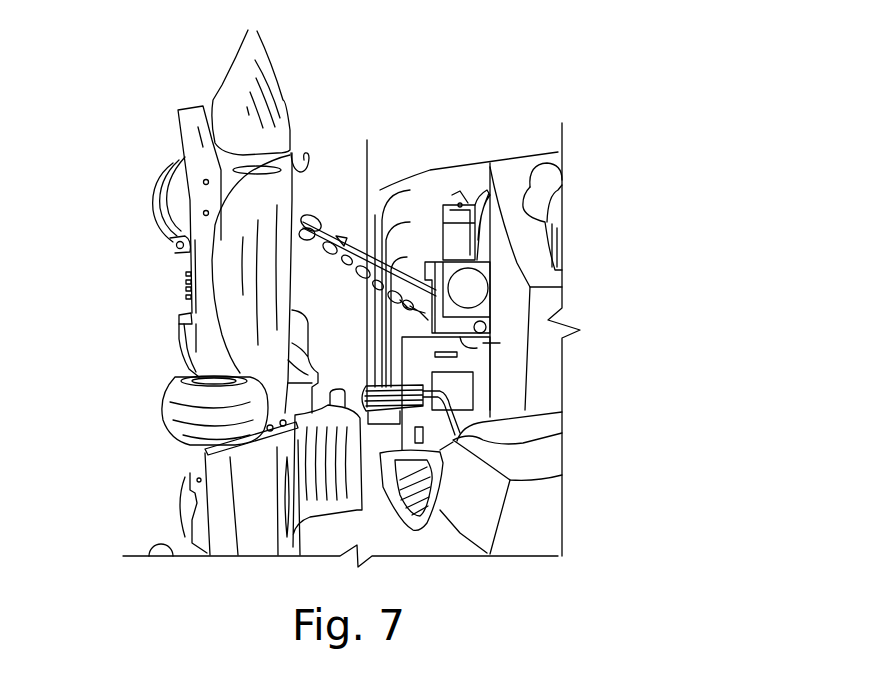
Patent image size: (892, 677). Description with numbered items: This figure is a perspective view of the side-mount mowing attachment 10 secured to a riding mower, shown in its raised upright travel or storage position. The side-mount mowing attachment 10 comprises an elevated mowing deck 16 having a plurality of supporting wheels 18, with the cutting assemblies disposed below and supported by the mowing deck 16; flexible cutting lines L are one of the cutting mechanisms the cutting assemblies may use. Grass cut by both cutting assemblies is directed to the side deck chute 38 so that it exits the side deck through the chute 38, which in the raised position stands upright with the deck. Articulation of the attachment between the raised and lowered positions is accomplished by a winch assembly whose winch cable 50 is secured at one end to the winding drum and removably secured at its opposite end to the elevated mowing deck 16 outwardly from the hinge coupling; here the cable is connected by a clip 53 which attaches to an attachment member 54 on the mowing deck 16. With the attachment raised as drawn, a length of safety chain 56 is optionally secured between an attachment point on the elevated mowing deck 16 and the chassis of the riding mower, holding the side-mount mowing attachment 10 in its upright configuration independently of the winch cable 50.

The side deck chute 38 is at (285, 80).
The attachment member 54 is at (308, 212).
The clip 53 is at (334, 240).
The safety chain 56 is at (350, 232).
The winch cable 50 is at (413, 190).
The flexible cutting lines L is at (158, 203).
The side-mount mowing attachment 10 is at (190, 299).
The elevated mowing deck 16 is at (185, 343).
The supporting wheels 18 is at (165, 427).